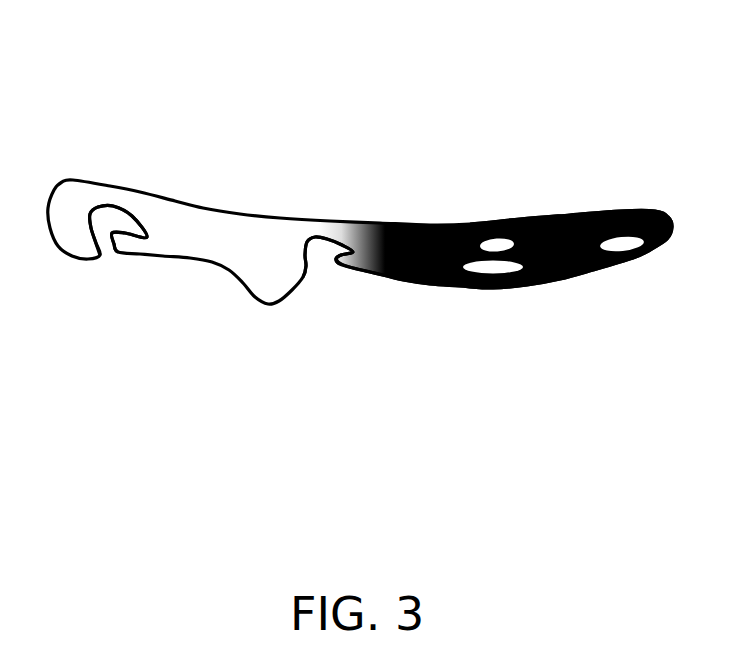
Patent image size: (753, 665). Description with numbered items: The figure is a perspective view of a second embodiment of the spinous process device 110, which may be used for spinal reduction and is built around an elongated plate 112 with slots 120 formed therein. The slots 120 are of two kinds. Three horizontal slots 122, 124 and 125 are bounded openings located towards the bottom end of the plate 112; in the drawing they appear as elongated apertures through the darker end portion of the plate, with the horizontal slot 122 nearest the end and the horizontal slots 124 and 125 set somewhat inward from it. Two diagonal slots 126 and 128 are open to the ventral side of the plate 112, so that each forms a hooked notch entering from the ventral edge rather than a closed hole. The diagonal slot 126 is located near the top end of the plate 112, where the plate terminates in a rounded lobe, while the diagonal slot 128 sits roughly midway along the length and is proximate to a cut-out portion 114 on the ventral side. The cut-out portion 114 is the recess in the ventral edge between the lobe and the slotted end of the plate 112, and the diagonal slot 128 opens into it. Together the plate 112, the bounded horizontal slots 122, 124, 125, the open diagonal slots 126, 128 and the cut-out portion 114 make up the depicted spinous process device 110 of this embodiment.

The blade 110 is at (373, 261).
The plate 112 is at (203, 224).
The cut-out portion 114 is at (355, 283).
The slots 120 is at (609, 262).
The horizontal slot 122 is at (627, 258).
The horizontal slot 124 is at (513, 279).
The horizontal slot 125 is at (497, 228).
The diagonal slot 126 is at (108, 246).
The diagonal slot 128 is at (327, 262).